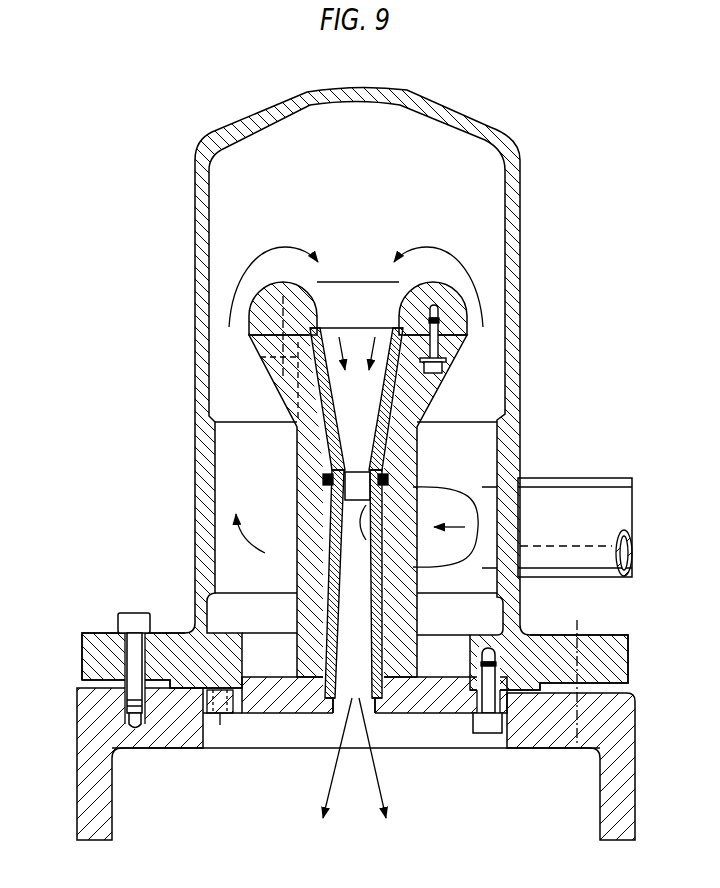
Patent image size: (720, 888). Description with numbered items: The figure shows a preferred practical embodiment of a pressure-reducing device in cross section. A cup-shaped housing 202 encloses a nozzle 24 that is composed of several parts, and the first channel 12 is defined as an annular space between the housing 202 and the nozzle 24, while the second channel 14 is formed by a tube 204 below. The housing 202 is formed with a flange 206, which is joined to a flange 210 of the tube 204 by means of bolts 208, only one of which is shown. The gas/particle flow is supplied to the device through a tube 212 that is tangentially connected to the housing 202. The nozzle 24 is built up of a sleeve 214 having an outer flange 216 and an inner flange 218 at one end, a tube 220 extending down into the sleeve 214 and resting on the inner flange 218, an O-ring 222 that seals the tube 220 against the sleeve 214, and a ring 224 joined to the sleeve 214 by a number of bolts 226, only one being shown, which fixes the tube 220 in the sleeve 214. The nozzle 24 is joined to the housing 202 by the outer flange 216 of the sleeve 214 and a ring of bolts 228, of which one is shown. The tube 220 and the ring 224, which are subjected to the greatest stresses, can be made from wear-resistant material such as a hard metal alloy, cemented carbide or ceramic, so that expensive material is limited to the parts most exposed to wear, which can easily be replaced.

The first channel 12 is at (262, 500).
The second channel 14 is at (568, 773).
The nozzle 24 is at (293, 445).
The cup-shaped housing 202 is at (195, 250).
The tube 204 is at (90, 776).
The flange 206 is at (97, 656).
The bolts 208 is at (131, 613).
The flange 210 is at (178, 722).
The tube 212 is at (610, 478).
The sleeve 214 is at (370, 503).
The outer flange 216 is at (442, 707).
The inner flange 218 is at (365, 700).
The tube 220 is at (326, 355).
The O-ring 222 is at (323, 478).
The ring 224 is at (460, 309).
The bolts 226 is at (436, 347).
The bolts 228 is at (493, 733).